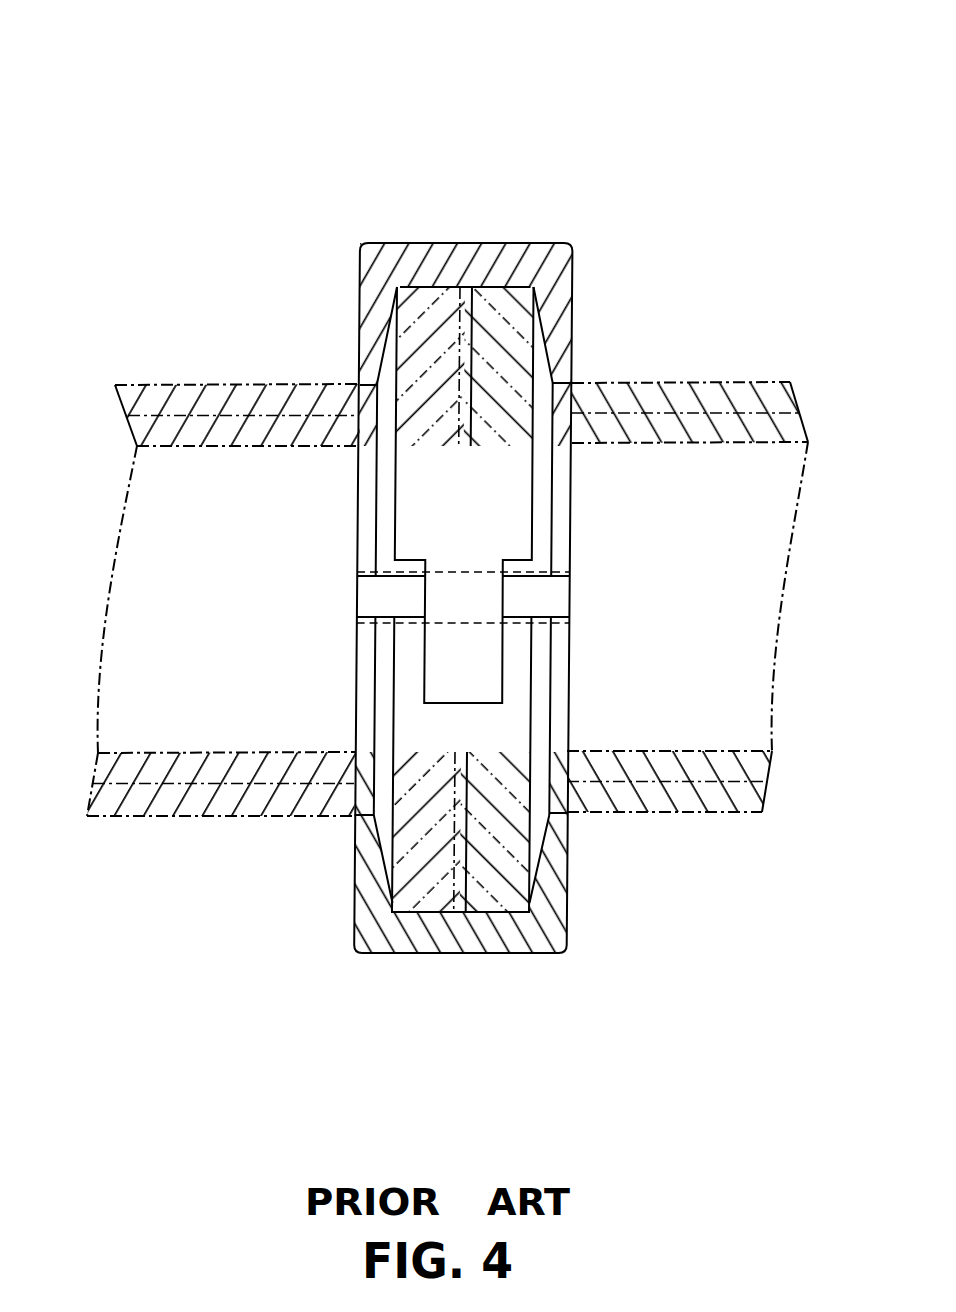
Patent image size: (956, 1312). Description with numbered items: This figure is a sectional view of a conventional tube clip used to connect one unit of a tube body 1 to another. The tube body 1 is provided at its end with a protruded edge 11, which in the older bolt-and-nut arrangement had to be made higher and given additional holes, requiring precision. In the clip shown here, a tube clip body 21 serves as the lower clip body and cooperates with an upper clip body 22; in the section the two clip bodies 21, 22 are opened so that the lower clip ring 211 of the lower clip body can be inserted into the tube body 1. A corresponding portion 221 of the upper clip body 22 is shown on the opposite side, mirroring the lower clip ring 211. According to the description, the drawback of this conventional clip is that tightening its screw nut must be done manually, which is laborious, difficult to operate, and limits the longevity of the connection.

The tube body 1 is at (190, 402).
The protruded edge 11 is at (495, 307).
The tube clip body 21 is at (467, 953).
The lower clip ring 211 is at (382, 835).
The upper clip body 22 is at (400, 243).
The tapered inner wall of upper member 221 is at (383, 362).